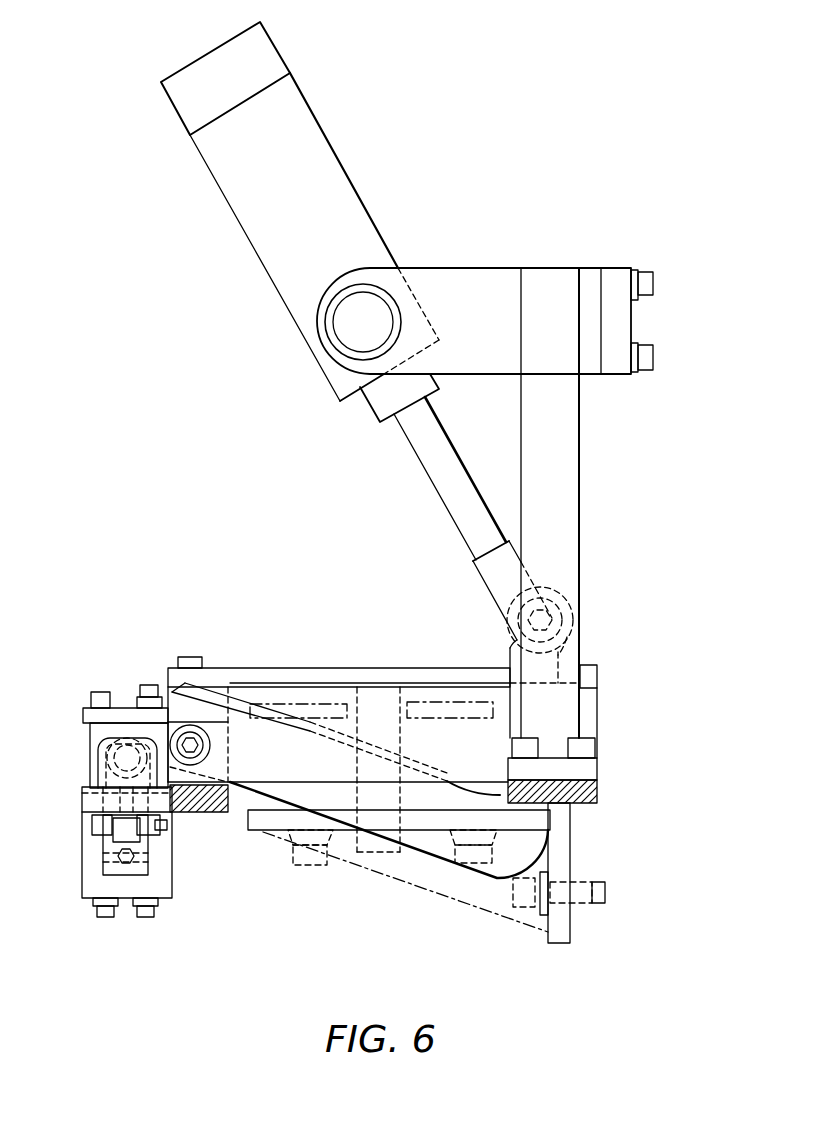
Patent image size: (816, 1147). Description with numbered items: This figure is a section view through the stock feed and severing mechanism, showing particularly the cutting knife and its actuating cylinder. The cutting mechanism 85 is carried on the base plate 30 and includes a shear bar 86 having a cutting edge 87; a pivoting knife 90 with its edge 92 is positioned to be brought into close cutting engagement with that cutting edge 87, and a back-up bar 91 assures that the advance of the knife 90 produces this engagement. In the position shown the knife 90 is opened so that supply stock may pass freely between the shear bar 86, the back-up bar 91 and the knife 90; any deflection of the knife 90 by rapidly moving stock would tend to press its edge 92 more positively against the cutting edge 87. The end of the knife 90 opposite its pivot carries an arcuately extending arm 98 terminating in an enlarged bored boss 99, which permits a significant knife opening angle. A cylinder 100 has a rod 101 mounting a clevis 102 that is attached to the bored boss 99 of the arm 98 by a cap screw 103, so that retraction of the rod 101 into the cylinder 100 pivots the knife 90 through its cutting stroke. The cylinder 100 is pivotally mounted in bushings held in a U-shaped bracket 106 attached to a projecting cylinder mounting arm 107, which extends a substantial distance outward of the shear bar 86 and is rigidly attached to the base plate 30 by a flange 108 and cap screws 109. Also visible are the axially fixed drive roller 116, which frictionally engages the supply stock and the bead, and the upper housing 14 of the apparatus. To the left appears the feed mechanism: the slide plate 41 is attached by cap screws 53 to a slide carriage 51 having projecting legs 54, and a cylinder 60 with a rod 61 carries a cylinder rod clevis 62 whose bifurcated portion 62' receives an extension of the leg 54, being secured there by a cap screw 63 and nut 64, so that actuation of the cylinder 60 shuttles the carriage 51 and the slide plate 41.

The cylinder 100 is at (294, 196).
The U-shaped bracket 106 is at (487, 331).
The cylinder mounting arm 107 is at (580, 466).
The rod 101 is at (456, 500).
The clevis 102 is at (487, 577).
The cap screw 103 is at (558, 601).
The bored boss 99 is at (508, 633).
The arcuately extending arm 98 is at (513, 670).
The cutting mechanism 85 is at (606, 654).
The back-up bar 91 is at (501, 731).
The cap screws 109 is at (584, 748).
The flange 108 is at (598, 770).
The base plate 30 is at (598, 793).
The shear bar 86 is at (277, 675).
The cutting edge 87 is at (382, 688).
The knife edge 92 is at (212, 697).
The knife 90 is at (187, 707).
The upper housing 14 is at (565, 852).
The drive roller 116 is at (363, 840).
The cap screws 53 is at (102, 700).
The slide plate 41 is at (90, 716).
The slide carriage 51 is at (95, 742).
The projecting legs 54 is at (93, 793).
The cylinder 60 is at (102, 890).
The cap screw 63 is at (96, 836).
The cylinder rod clevis 62 is at (157, 859).
The bifurcated portion 62' is at (160, 842).
The rod 61 is at (117, 858).
The nut 64 is at (167, 825).